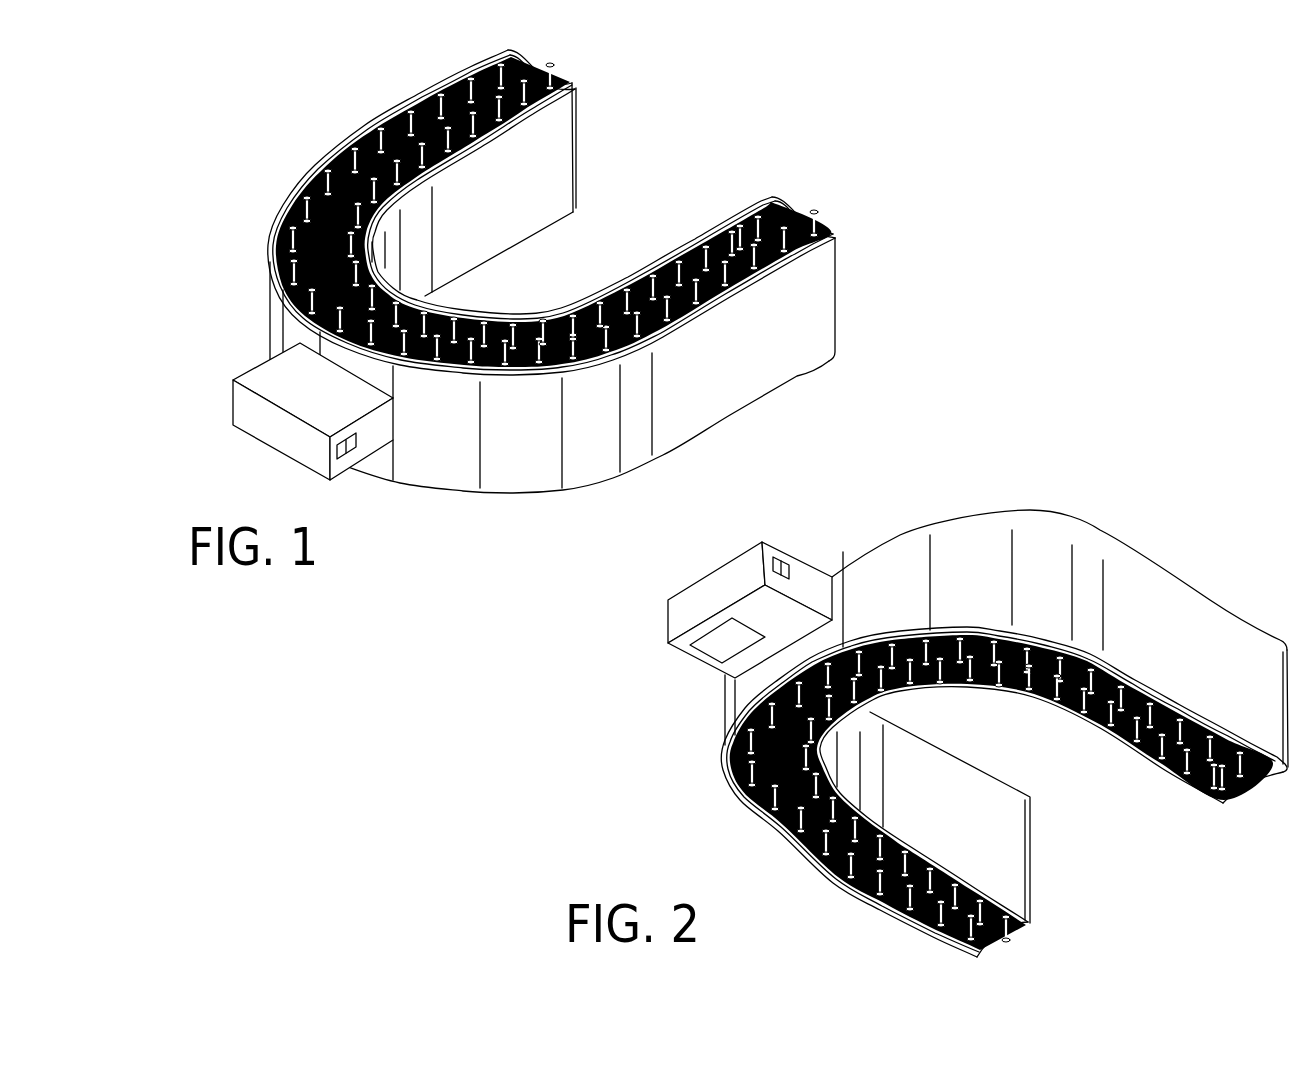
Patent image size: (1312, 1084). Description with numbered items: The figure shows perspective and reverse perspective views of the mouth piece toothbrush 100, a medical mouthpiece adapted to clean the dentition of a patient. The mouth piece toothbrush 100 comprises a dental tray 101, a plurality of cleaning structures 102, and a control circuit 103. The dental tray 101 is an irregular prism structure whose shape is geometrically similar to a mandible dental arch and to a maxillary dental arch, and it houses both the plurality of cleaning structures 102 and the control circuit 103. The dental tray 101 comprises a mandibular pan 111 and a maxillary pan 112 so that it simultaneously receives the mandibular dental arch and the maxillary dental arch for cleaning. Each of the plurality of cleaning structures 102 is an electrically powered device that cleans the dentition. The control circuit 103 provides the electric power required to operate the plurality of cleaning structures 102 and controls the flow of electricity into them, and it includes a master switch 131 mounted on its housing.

In FIG. 1, the mouth piece toothbrush 100 is at (474, 333).
In FIG. 1, the dental tray 101 is at (513, 470).
In FIG. 2, the dental tray 101 is at (1037, 563).
In FIG. 1, the plurality of cleaning structures 102 is at (362, 147).
In FIG. 2, the plurality of cleaning structures 102 is at (940, 873).
In FIG. 1, the control circuit 103 is at (293, 405).
In FIG. 2, the control circuit 103 is at (717, 575).
In FIG. 2, the mandibular pan 111 is at (1222, 780).
In FIG. 1, the maxillary pan 112 is at (740, 233).
In FIG. 1, the master switch 131 is at (358, 449).
In FIG. 2, the master switch 131 is at (777, 558).